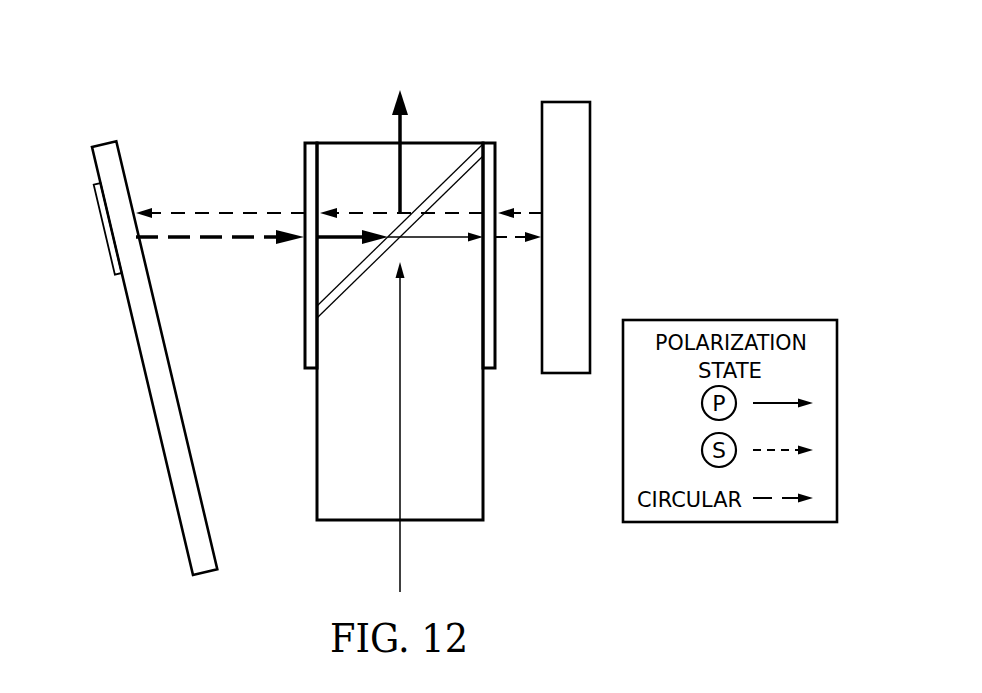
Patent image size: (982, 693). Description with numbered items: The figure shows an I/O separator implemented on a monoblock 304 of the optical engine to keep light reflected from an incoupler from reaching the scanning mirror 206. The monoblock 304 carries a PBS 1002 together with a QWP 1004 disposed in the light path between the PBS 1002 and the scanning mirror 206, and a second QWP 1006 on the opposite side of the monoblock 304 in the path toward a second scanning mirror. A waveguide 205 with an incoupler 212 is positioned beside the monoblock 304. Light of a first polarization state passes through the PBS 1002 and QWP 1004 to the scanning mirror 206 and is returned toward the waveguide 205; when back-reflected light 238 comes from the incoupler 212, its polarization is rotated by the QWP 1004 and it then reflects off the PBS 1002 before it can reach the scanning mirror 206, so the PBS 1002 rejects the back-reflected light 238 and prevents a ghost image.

The waveguide 205 is at (142, 360).
The incoupler 212 is at (103, 230).
The back-reflected light 238 is at (224, 240).
The monoblock 304 is at (316, 449).
The second QWP 1006 is at (311, 369).
The QWP 1004 is at (488, 369).
The PBS 1002 is at (459, 165).
The scanning mirror 206 is at (592, 225).